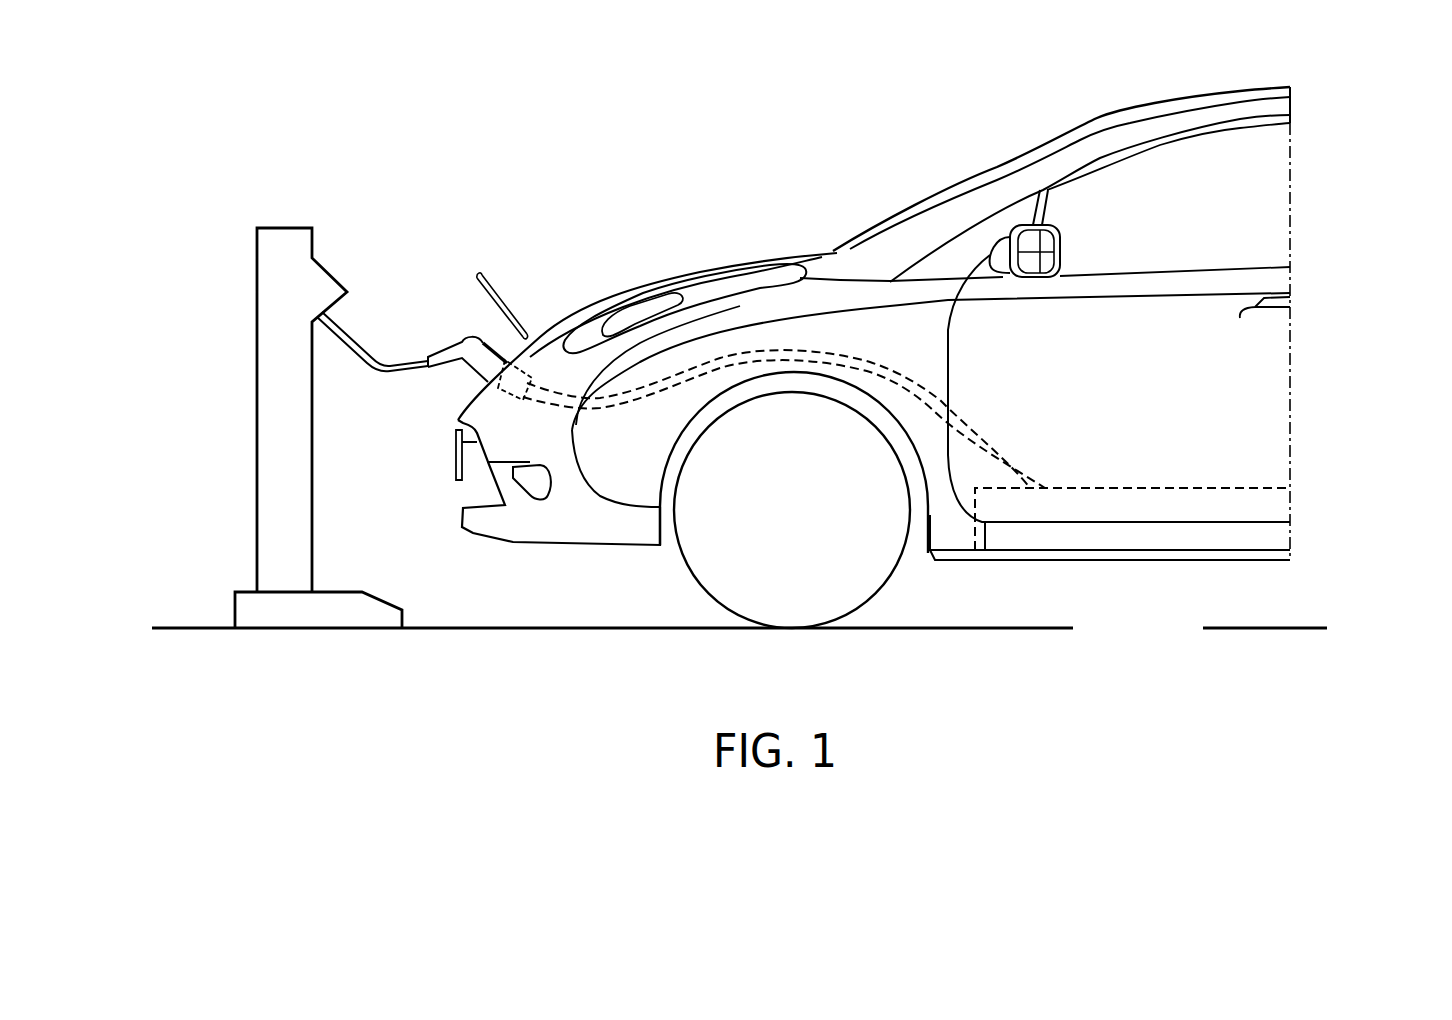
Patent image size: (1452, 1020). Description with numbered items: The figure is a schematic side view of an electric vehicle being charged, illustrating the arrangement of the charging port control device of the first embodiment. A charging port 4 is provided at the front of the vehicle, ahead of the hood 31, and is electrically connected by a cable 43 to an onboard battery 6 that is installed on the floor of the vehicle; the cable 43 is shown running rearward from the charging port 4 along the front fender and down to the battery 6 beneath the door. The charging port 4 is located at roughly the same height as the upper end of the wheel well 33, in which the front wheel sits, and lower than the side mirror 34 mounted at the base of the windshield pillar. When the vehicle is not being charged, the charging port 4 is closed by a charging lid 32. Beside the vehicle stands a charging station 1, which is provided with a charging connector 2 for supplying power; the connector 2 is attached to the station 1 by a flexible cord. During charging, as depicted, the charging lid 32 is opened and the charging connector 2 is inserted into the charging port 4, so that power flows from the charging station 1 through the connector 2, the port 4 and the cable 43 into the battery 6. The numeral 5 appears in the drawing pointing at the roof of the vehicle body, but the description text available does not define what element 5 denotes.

The charging station 1 is at (296, 224).
The charging connector 2 is at (454, 340).
The charging port 4 is at (505, 400).
The vehicle 5 is at (1144, 94).
The onboard battery 6 is at (1217, 488).
The hood 31 is at (586, 322).
The charging lid 32 is at (481, 288).
The wheel well 33 is at (873, 393).
The side mirror 34 is at (1022, 247).
The cable 43 is at (838, 352).